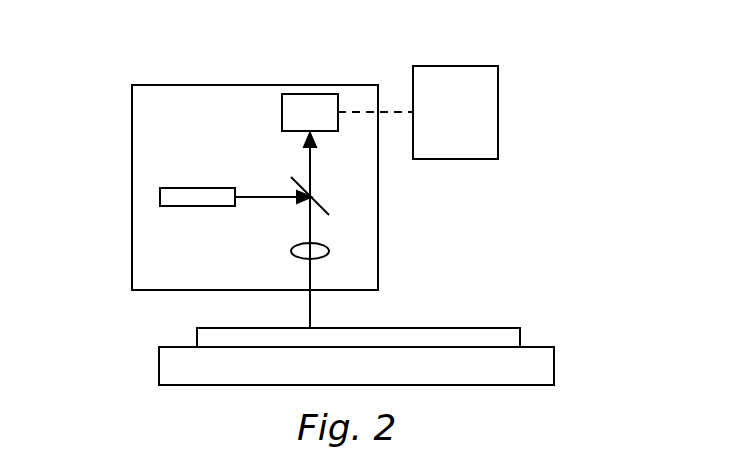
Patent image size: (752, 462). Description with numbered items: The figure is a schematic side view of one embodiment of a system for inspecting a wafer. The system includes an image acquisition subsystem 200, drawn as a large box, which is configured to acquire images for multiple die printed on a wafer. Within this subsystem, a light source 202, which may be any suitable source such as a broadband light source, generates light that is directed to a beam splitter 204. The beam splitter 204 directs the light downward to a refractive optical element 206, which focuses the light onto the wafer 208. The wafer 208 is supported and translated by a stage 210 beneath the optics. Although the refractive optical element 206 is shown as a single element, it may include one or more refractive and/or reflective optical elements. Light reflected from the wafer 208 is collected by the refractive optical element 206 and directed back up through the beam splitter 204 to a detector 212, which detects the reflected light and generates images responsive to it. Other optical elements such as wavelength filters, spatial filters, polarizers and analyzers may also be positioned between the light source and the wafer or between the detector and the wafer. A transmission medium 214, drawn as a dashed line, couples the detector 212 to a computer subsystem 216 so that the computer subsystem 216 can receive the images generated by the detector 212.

The image acquisition subsystem 200 is at (132, 106).
The light source 202 is at (159, 195).
The beam splitter 204 is at (321, 206).
The refractive optical element 206 is at (329, 250).
The wafer 208 is at (506, 338).
The stage 210 is at (543, 365).
The detector 212 is at (310, 94).
The transmission medium 214 is at (383, 112).
The computer subsystem 216 is at (488, 122).